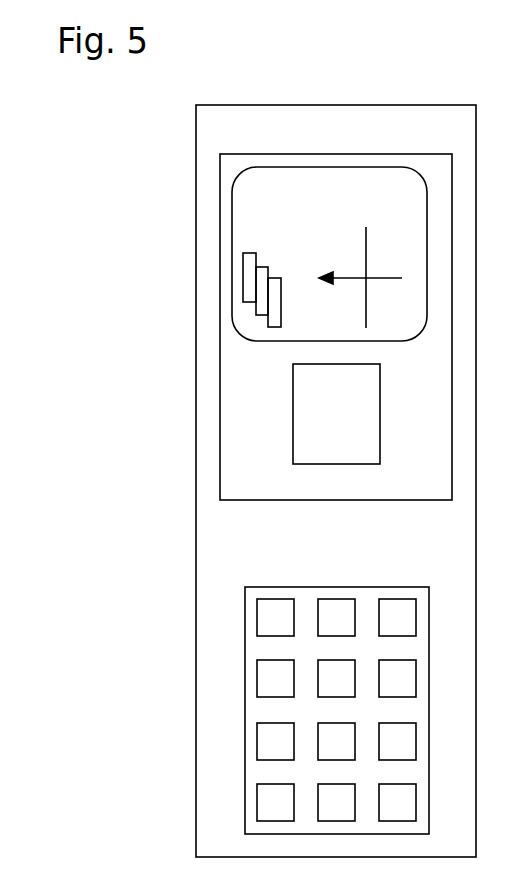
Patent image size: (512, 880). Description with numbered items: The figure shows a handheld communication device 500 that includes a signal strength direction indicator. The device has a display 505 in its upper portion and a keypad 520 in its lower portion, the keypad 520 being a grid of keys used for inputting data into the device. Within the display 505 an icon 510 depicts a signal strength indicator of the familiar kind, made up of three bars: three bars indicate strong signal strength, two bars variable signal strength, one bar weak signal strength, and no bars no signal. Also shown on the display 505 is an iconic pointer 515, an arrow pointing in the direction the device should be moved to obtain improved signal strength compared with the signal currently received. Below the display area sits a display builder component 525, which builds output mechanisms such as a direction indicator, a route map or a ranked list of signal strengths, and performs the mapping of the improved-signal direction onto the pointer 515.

The mobile communication device 500 is at (278, 481).
The display 505 is at (322, 167).
The icon 510 is at (243, 316).
The pointer 515 is at (355, 277).
The keypad 520 is at (245, 660).
The display builder component 525 is at (336, 414).